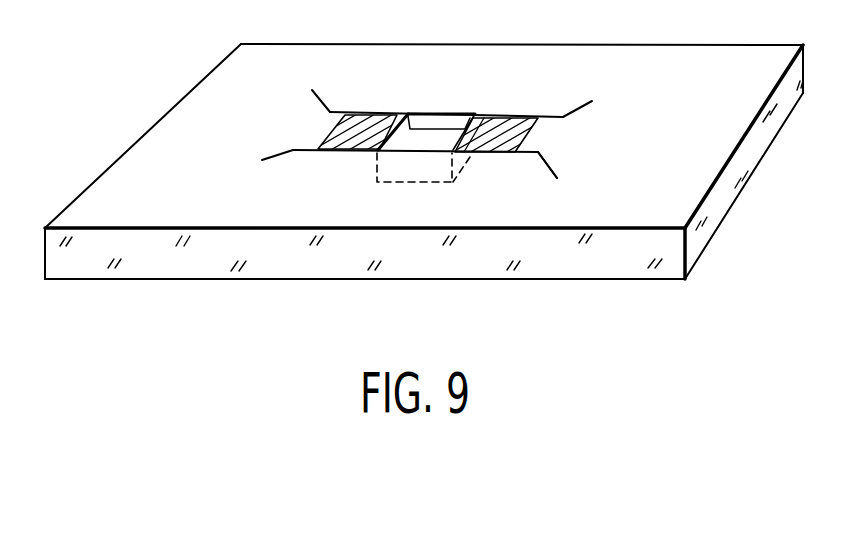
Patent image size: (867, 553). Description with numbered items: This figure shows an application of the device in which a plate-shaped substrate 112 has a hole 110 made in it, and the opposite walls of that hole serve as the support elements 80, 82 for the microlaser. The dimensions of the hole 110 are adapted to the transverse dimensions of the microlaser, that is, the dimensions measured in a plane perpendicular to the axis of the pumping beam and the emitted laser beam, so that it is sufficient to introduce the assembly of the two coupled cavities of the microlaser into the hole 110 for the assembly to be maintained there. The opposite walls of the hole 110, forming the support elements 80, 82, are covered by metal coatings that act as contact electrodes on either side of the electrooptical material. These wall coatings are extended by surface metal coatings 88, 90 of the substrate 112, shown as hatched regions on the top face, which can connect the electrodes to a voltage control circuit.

The support element 80 is at (343, 160).
The support element 82 is at (497, 158).
The surface metal coating 88 is at (528, 115).
The surface metal coating 90 is at (360, 113).
The hole 110 is at (440, 128).
The substrate 112 is at (153, 262).